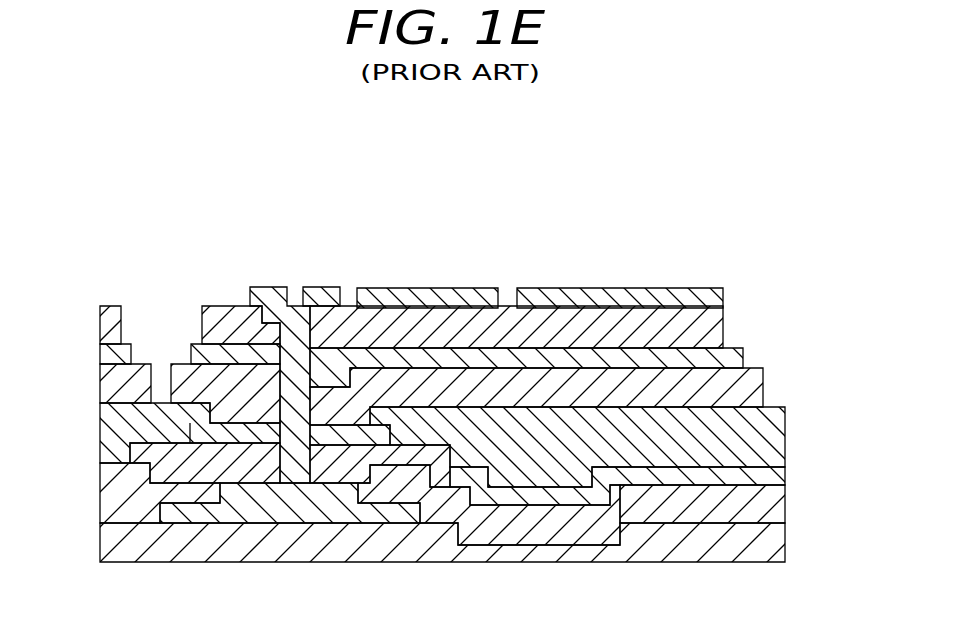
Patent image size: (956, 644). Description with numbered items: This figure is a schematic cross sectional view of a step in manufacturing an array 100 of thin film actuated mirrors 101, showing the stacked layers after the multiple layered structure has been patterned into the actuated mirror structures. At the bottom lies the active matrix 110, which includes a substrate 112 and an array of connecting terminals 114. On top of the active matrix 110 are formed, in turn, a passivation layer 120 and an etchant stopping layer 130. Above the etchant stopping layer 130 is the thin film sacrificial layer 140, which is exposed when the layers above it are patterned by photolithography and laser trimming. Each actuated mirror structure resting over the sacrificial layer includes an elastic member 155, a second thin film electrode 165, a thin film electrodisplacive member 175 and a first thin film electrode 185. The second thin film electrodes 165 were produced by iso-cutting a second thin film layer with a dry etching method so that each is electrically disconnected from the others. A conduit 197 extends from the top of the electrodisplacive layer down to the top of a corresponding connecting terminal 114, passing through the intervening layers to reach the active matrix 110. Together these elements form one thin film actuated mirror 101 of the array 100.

The array 100 is at (728, 120).
The thin film actuated mirror 101 is at (785, 208).
The active matrix 110 is at (88, 482).
The substrate 112 is at (765, 549).
The connecting terminal 114 is at (280, 502).
The passivation layer 120 is at (763, 509).
The etchant stopping layer 130 is at (763, 477).
The thin film sacrificial layer 140 is at (765, 433).
The elastic member 155 is at (752, 382).
The second thin film electrode 165 is at (735, 360).
The thin film electrodisplacive member 175 is at (705, 330).
The first thin film electrode 185 is at (615, 290).
The conduit 197 is at (267, 297).